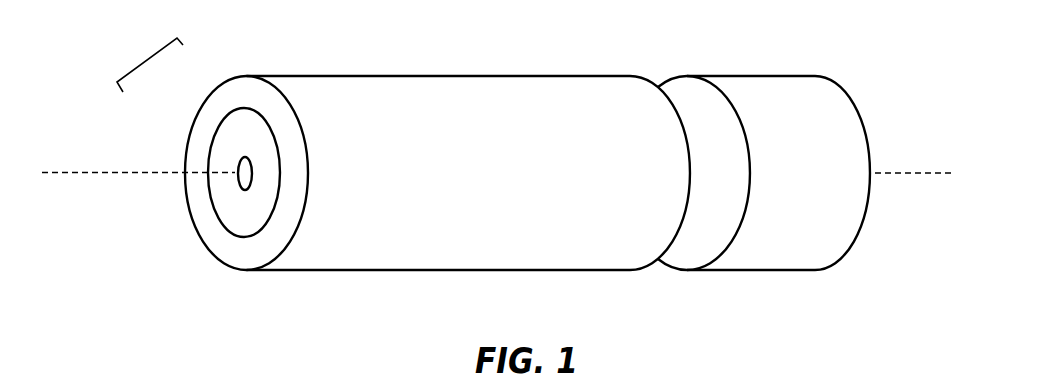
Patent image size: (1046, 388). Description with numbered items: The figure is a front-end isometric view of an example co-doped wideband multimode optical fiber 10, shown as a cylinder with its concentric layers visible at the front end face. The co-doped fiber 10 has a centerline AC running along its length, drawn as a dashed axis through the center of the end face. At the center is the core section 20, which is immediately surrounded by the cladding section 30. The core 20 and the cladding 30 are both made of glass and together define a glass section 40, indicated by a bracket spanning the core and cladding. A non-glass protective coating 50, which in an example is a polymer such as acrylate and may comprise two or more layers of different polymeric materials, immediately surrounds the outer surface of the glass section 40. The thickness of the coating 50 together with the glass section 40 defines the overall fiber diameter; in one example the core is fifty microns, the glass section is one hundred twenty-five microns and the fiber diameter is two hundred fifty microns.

The co-doped wideband multimode optical fiber 10 is at (633, 61).
The core section 20 is at (237, 168).
The cladding section 30 is at (227, 155).
The glass section 40 is at (148, 60).
The non-glass protective coating 50 is at (258, 88).
The centerline AC is at (155, 173).